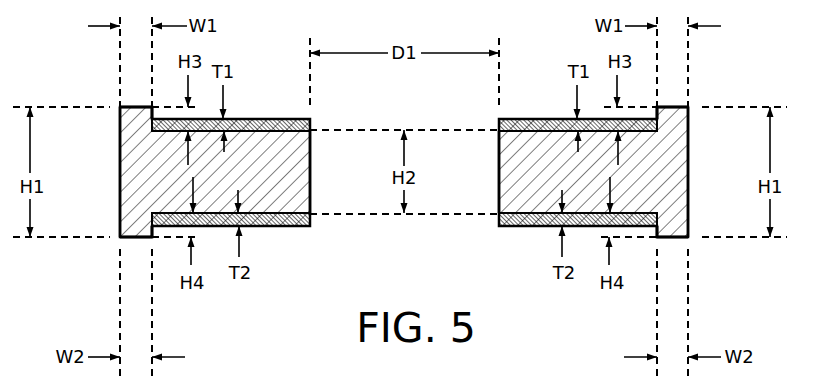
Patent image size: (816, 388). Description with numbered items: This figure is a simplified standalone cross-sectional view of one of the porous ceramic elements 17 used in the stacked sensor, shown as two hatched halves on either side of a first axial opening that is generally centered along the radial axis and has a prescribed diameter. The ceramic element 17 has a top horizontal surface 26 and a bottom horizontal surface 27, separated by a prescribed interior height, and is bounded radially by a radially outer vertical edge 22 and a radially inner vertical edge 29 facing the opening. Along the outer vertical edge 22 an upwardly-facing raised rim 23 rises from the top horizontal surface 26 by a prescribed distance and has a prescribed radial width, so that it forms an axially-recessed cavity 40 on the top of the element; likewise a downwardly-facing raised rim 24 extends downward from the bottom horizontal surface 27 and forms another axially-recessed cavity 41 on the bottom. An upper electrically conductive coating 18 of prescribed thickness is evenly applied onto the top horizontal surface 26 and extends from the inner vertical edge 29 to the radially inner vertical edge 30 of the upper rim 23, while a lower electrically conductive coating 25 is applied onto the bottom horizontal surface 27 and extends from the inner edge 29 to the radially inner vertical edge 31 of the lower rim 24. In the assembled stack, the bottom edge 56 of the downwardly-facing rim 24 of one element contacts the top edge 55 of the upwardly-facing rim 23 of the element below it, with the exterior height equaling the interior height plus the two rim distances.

The porous ceramic element 17 is at (215, 182).
The upper electrically conductive coating 18 is at (254, 119).
The radially outer vertical edge 22 is at (118, 156).
The upwardly-facing raised rim 23 is at (137, 115).
The downwardly-facing raised rim 24 is at (137, 239).
The lower electrically conductive coating 25 is at (275, 227).
The top horizontal surface 26 is at (311, 143).
The bottom horizontal surface 27 is at (310, 197).
The radially inner vertical edge 29 is at (311, 161).
The radially inner vertical edge of the upwardly-facing raised rim 30 is at (146, 101).
The radially inner vertical edge of the downwardly-facing raised rim 31 is at (163, 234).
The axially-recessed cavity 40 is at (245, 118).
The axially-recessed cavity 41 is at (258, 230).
The top edge of the upwardly-facing raised rim 55 is at (170, 107).
The bottom edge of the downwardly-facing raised rim 56 is at (148, 241).